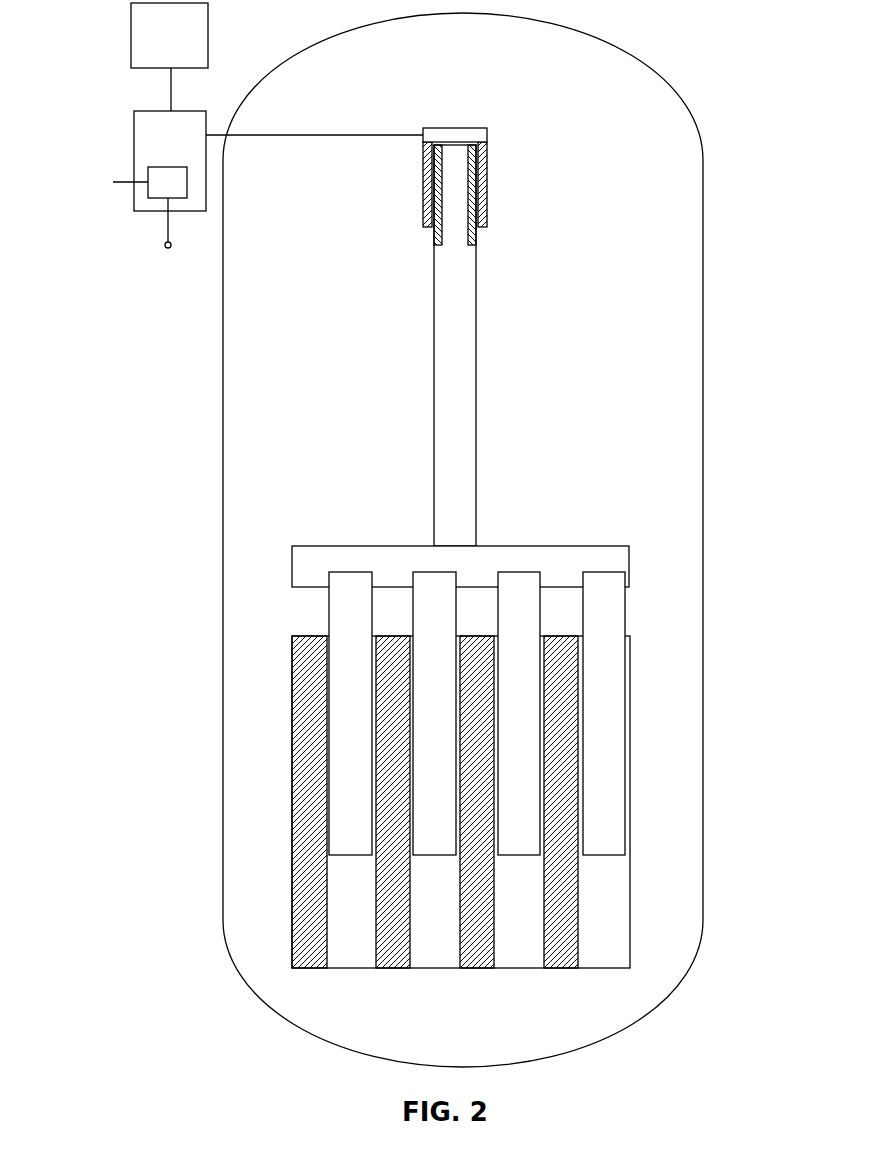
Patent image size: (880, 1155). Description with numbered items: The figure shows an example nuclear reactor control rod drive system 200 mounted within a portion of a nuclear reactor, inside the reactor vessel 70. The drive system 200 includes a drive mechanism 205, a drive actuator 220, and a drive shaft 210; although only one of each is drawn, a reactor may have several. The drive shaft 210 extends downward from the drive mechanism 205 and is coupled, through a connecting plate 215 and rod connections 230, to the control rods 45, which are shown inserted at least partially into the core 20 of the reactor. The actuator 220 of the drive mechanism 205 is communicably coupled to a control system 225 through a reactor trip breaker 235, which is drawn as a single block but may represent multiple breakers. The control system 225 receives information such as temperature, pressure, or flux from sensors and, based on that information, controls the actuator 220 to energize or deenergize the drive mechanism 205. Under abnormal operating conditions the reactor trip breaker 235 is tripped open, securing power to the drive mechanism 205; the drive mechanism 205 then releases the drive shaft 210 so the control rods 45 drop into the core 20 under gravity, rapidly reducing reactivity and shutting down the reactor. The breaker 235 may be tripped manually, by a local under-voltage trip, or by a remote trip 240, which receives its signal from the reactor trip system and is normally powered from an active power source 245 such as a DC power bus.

The core 20 is at (630, 898).
The control rods 45 is at (329, 603).
The reactor vessel 70 is at (703, 345).
The nuclear reactor control rod drive system 200 is at (342, 430).
The drive mechanism 205 is at (487, 180).
The drive shaft 210 is at (477, 272).
The spider / connecting plate 215 is at (303, 546).
The drive actuator 220 is at (467, 128).
The control system 225 is at (188, 43).
The rod drive connections 230 is at (329, 586).
The reactor trip breaker 235 is at (206, 108).
The remote trip 240 is at (187, 168).
The active power source 245 is at (165, 258).